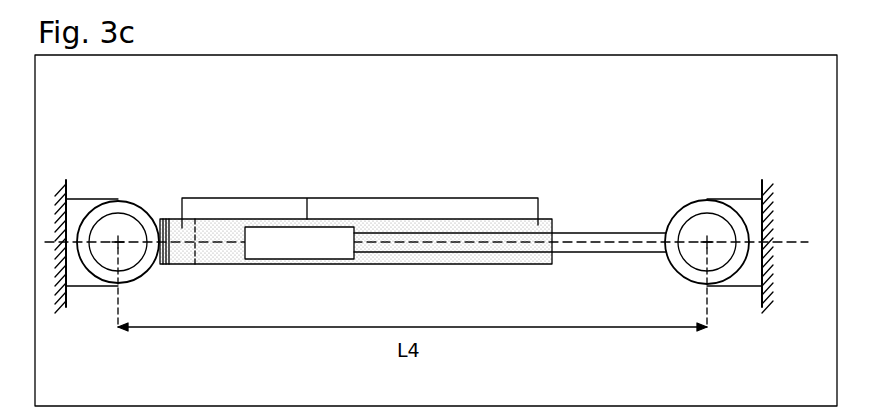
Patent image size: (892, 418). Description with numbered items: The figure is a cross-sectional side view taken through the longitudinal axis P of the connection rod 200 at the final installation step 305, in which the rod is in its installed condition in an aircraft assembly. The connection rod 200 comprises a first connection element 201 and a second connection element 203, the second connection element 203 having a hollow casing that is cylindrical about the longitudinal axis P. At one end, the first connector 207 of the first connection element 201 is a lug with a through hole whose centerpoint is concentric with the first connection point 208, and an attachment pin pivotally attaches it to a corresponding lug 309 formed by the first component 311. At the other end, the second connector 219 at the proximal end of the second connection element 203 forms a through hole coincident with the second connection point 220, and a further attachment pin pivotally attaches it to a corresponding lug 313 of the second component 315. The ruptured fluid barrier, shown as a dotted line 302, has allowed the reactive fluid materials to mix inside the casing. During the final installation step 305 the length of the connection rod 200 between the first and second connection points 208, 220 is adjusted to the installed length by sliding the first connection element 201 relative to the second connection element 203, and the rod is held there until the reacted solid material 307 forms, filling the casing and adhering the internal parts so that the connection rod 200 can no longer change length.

The final installation step 305 is at (436, 230).
The second component 315 is at (66, 181).
The lug of second component 313 is at (105, 198).
The second connection point 220 is at (121, 239).
The second connector 219 is at (140, 280).
The ruptured fluid barrier 302 is at (196, 256).
The second connection element 203 is at (448, 264).
The connection rod 200 is at (356, 266).
The reacted solid material 307 is at (352, 198).
The longitudinal axis P is at (557, 241).
The first component 311 is at (762, 181).
The lug of first component 309 is at (745, 199).
The first connector 207 is at (703, 200).
The first connection point 208 is at (705, 240).
The first connection element 201 is at (666, 310).